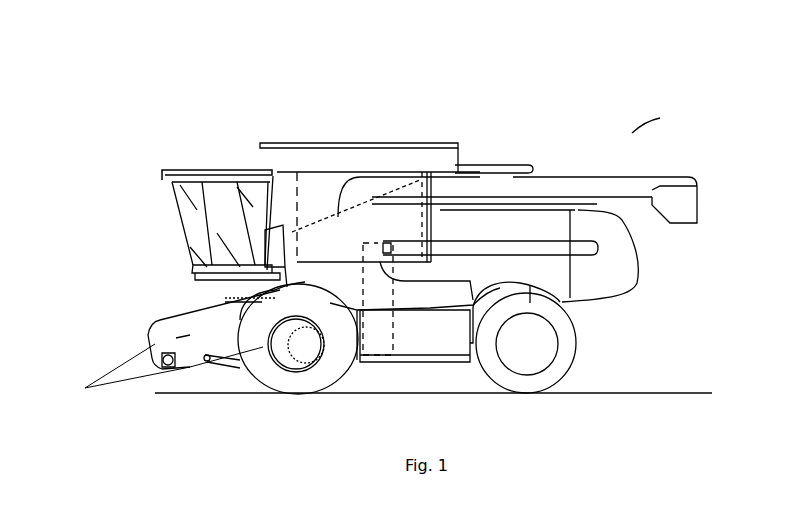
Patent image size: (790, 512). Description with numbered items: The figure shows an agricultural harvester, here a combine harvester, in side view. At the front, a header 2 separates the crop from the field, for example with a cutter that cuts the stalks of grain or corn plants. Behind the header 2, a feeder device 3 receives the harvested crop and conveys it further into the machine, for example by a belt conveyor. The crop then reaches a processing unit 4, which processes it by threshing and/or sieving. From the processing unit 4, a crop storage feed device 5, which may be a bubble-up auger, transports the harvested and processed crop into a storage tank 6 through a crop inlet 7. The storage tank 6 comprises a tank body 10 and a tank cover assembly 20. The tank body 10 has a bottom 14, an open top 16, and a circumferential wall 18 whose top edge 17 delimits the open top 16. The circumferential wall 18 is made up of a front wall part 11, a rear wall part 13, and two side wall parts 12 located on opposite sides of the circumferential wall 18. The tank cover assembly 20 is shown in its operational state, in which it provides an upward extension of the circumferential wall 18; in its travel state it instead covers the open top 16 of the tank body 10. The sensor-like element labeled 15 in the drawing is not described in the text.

The header 2 is at (127, 370).
The feeder device 3 is at (148, 317).
The processing unit 4 is at (440, 335).
The crop storage feed device 5 is at (378, 282).
The storage tank 6 is at (393, 118).
The crop inlet 7 is at (460, 275).
The tank body 10 is at (410, 218).
The front wall part 11 is at (300, 207).
The side wall parts 12 is at (328, 258).
The rear wall part 13 is at (418, 193).
The bottom 14 is at (330, 228).
The control unit 15 is at (377, 228).
The open top 16 is at (380, 168).
The top edge 17 is at (314, 182).
The circumferential wall 18 is at (318, 209).
The tank cover assembly 20 is at (362, 160).